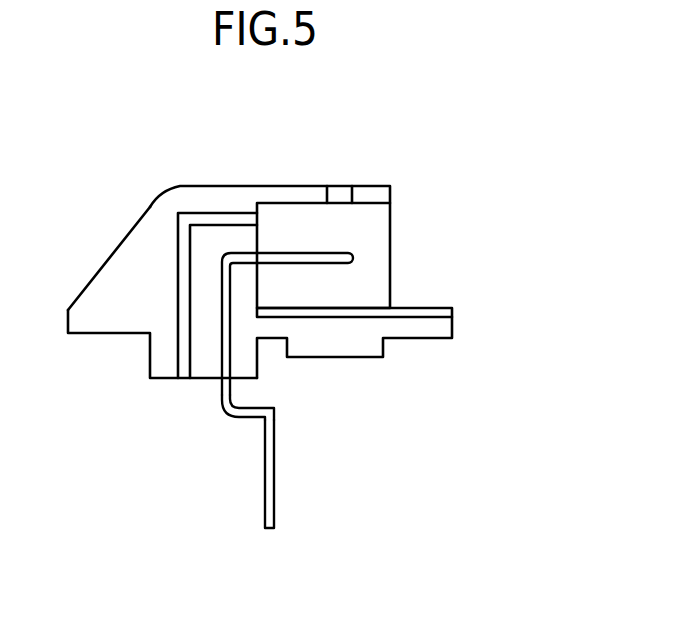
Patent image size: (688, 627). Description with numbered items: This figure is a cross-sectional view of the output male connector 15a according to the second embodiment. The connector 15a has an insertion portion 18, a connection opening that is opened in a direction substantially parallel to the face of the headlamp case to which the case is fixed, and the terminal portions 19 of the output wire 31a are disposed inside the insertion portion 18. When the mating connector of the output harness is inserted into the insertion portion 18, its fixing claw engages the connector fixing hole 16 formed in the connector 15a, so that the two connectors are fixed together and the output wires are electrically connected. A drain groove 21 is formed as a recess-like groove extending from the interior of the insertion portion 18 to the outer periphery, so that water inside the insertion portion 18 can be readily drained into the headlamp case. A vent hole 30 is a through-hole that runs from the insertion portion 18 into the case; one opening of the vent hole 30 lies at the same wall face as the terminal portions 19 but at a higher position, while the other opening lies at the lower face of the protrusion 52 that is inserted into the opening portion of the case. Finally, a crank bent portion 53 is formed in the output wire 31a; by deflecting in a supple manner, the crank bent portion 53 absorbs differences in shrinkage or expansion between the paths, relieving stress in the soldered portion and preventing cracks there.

The output male connector 15a is at (123, 243).
The vent hole 30 is at (226, 213).
The connector fixing hole 16 is at (340, 186).
The insertion portion 18 is at (372, 222).
The terminal portions 19 is at (350, 257).
The drain groove 21 is at (438, 308).
The protrusion 52 is at (147, 355).
The crank bent portion 53 is at (273, 413).
The output wire 31a is at (275, 503).